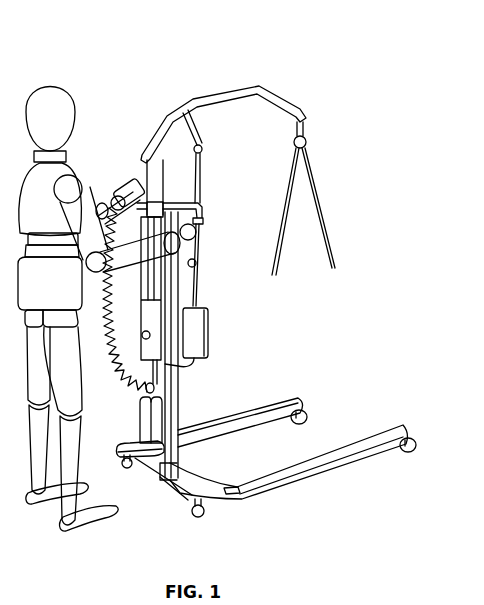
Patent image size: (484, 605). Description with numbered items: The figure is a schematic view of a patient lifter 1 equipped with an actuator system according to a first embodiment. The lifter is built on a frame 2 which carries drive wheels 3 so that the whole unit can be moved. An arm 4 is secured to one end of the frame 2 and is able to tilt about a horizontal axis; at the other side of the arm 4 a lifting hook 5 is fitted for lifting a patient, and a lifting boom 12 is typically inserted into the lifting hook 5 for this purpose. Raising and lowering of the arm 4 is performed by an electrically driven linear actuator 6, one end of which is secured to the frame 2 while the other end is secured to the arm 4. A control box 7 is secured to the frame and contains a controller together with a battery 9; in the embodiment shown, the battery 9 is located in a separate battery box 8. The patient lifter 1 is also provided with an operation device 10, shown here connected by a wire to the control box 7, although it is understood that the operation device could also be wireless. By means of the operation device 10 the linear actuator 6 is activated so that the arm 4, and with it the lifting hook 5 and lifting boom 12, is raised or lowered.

The patient lifter 1 is at (145, 101).
The frame 2 is at (166, 468).
The drive wheels 3 is at (126, 461).
The arm 4 is at (231, 90).
The lifting hook 5 is at (304, 138).
The electrically driven linear actuator 6 is at (199, 325).
The control box 7 is at (148, 355).
The battery box 8 is at (172, 279).
The battery 9 is at (140, 285).
The operation device 10 is at (133, 186).
The lifting boom 12 is at (318, 188).